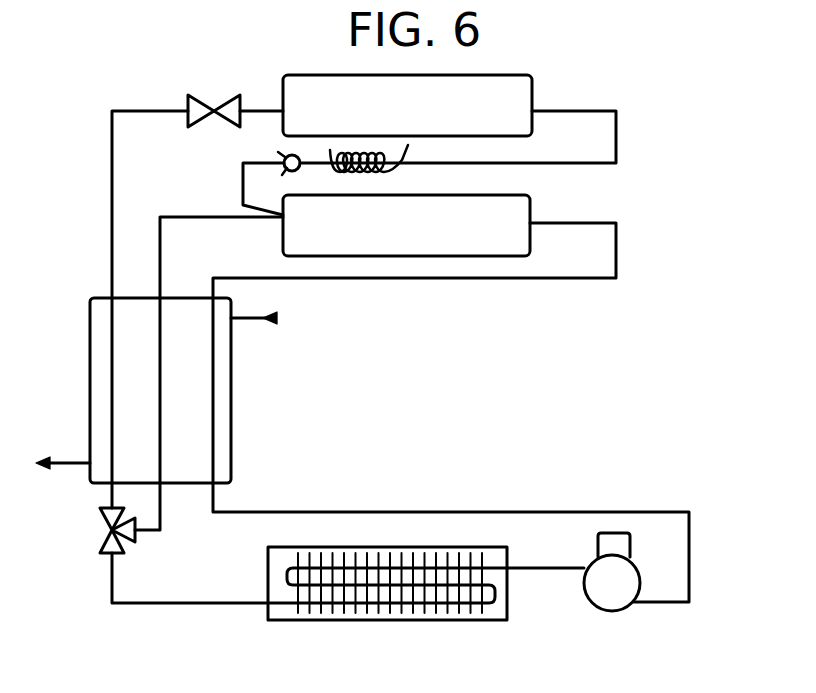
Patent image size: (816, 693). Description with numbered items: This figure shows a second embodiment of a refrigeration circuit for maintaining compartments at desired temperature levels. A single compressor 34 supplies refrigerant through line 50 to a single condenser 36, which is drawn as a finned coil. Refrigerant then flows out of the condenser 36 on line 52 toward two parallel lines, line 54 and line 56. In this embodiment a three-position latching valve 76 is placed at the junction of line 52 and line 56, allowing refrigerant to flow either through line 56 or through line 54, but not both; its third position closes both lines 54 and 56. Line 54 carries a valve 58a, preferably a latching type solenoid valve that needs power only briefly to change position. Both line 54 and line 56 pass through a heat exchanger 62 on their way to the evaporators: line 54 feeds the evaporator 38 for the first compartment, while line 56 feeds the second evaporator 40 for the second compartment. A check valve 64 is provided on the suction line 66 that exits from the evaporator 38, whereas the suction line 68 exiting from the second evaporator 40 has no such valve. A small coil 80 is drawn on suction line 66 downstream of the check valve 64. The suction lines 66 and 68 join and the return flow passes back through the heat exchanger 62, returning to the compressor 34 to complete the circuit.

The compressor 34 is at (623, 603).
The condenser 36 is at (503, 620).
The evaporator 38 is at (520, 90).
The second evaporator 40 is at (522, 215).
The line 50 is at (527, 563).
The line 52 is at (112, 578).
The line 54 is at (112, 233).
The line 56 is at (160, 258).
The solenoid valve 58a is at (203, 97).
The heat exchanger 62 is at (231, 415).
The check valve 64 is at (288, 157).
The suction line 66 is at (616, 140).
The suction line 68 is at (617, 248).
The three-position latching valve 76 is at (100, 512).
The heating coil 80 is at (408, 145).